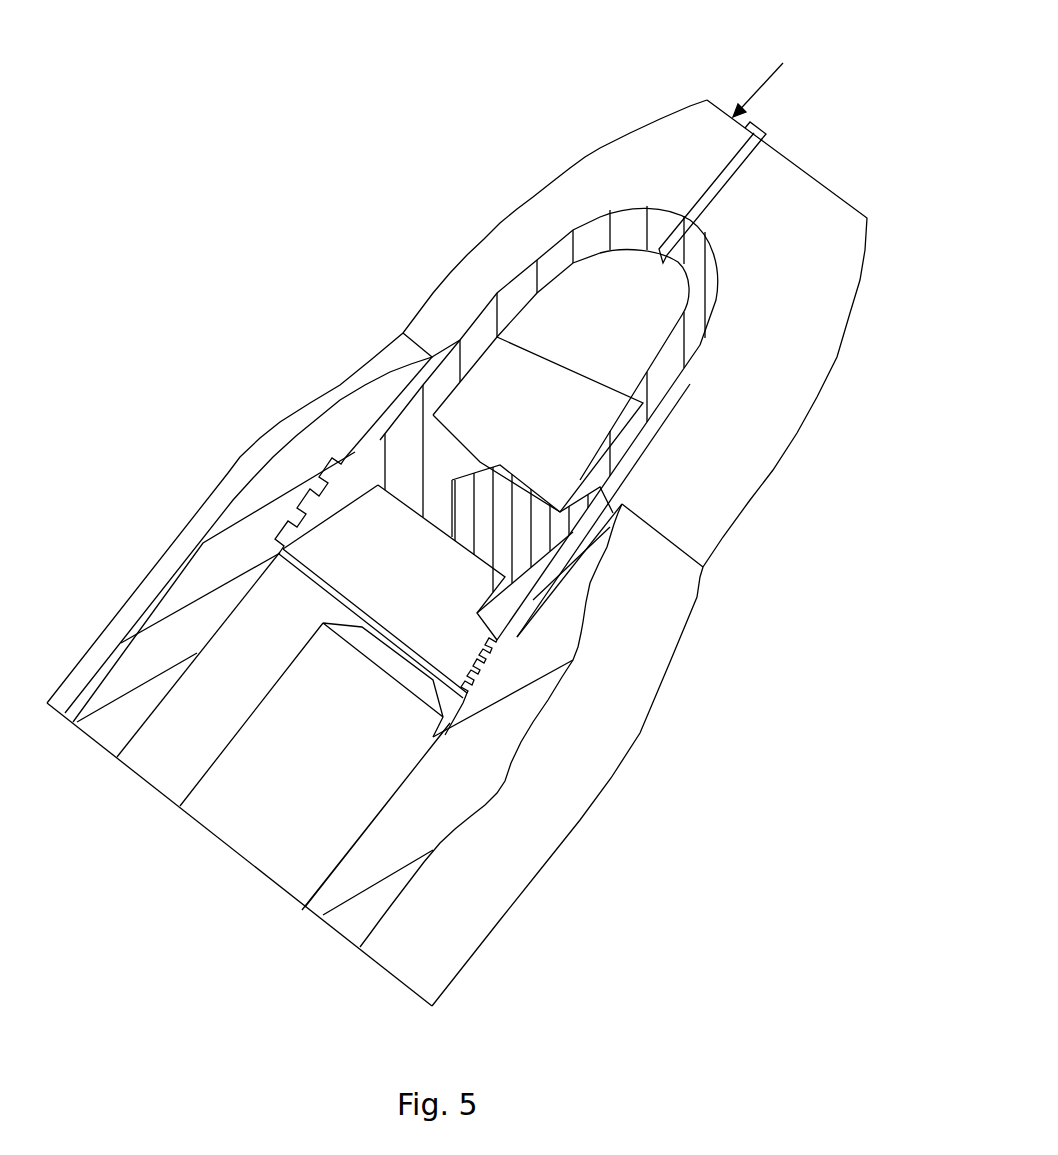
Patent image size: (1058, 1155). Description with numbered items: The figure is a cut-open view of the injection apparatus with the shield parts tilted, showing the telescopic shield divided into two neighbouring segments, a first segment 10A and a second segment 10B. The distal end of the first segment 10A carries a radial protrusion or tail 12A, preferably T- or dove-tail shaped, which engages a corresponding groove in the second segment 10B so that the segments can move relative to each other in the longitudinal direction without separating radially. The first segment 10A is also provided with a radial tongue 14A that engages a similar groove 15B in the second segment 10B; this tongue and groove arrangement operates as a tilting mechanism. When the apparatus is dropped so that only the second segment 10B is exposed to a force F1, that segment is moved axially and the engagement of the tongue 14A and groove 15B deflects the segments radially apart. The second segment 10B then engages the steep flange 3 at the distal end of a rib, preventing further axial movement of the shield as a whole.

The first segment 10A is at (763, 385).
The second segment 10B is at (597, 187).
The tail 12A is at (753, 130).
The radial tongue 14A is at (465, 487).
The groove 15B is at (437, 478).
The steep flange 3 is at (509, 641).
The force F1 is at (758, 77).